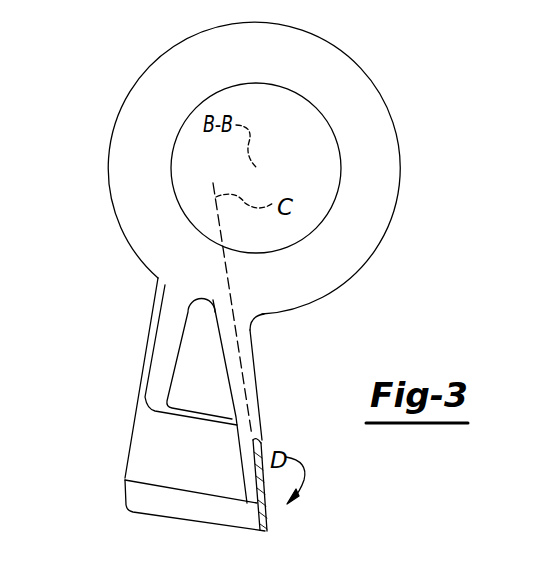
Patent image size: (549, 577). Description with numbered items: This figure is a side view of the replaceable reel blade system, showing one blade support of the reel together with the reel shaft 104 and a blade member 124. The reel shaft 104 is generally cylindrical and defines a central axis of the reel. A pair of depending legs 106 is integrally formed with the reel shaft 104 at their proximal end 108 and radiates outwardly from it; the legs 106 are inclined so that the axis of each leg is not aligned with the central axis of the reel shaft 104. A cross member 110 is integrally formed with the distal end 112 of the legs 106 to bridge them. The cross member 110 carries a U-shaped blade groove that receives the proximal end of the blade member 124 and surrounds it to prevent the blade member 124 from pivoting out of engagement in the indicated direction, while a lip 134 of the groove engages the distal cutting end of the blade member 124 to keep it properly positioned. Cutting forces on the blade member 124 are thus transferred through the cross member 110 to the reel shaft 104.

The reel shaft 104 is at (379, 225).
The depending legs 106 is at (252, 386).
The proximal end 108 is at (243, 326).
The cross member 110 is at (146, 430).
The distal end 112 is at (239, 402).
The blade member 124 is at (266, 518).
The lip 134 is at (266, 438).